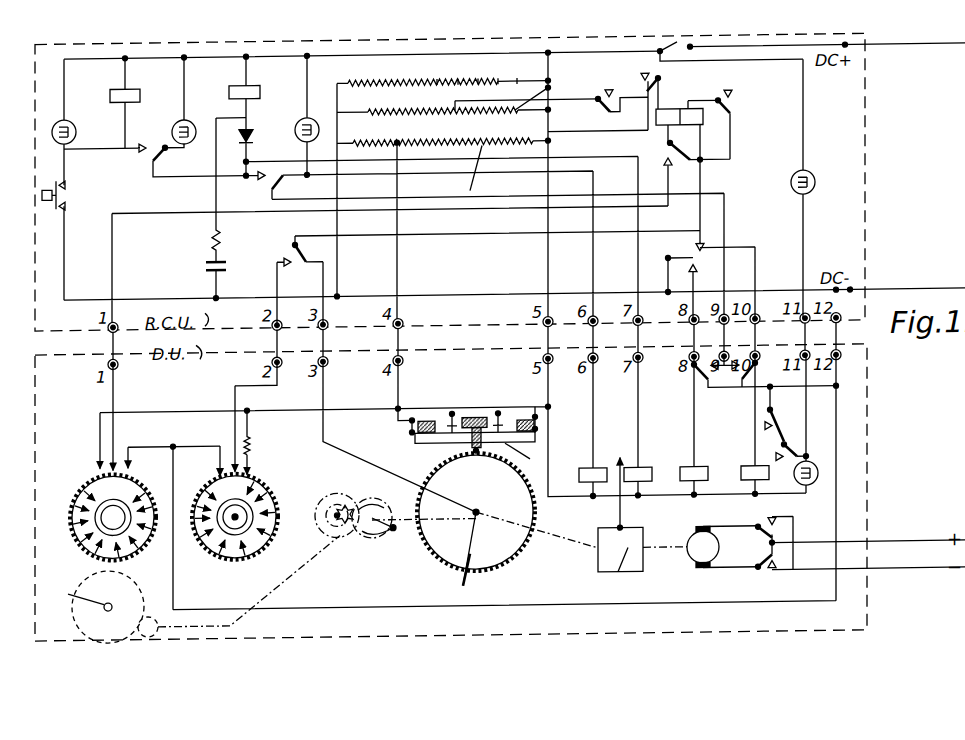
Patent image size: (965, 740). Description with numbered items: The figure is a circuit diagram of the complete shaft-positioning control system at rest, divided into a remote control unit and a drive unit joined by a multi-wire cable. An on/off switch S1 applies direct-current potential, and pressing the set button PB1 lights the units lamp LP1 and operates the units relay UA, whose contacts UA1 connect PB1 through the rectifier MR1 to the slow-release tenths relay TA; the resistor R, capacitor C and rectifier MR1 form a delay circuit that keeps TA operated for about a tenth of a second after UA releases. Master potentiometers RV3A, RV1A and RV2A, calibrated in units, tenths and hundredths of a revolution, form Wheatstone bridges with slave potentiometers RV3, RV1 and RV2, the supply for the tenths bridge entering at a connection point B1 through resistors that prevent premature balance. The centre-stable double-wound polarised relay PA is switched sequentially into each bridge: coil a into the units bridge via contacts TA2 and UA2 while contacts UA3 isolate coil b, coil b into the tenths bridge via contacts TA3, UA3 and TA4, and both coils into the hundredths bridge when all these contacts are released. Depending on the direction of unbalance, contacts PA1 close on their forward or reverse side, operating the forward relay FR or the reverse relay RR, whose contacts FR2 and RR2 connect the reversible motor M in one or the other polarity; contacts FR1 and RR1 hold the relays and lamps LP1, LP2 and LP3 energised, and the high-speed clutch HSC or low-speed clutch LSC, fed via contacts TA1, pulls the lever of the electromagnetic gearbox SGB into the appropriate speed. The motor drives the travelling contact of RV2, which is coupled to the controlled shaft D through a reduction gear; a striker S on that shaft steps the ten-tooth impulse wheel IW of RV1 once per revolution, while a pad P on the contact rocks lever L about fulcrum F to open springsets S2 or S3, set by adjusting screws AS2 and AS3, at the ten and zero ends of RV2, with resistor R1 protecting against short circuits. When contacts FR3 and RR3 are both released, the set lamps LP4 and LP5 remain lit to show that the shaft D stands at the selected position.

The units indicating lamp LP1 is at (79, 122).
The units relay UA is at (104, 104).
The tenths indicating lamp LP2 is at (169, 102).
The relay contacts UA1 is at (155, 160).
The set switch button PB1 is at (71, 197).
The tenths relay TA is at (232, 85).
The dry plate rectifier MR1 is at (252, 136).
The resistor R is at (224, 190).
The capacitor C is at (223, 280).
The hundredths indicating lamp LP3 is at (293, 116).
The relay contacts TA1 is at (258, 190).
The relay contacts TA4 is at (285, 263).
The units master potentiometer RV3A is at (442, 85).
The tenths master potentiometer RV1A is at (467, 95).
The resistor R1 is at (442, 142).
The hundredths master potentiometer RV2A is at (451, 173).
The on/off switch S1 is at (812, 64).
The relay contacts TA2 is at (634, 102).
The relay contacts UA3 is at (609, 106).
The polarised relay PA is at (677, 118).
The relay contacts TA3 is at (735, 118).
The relay contacts UA2 is at (663, 166).
The set lamp LP4 is at (791, 193).
The polarised relay contacts PA1 is at (700, 222).
The units slave potentiometer RV3 is at (158, 470).
The supply connection point B1 is at (260, 442).
The tenths slave potentiometer RV1 is at (262, 478).
The controlled shaft D is at (99, 607).
The impulse wheel IW is at (334, 506).
The striker S is at (414, 520).
The springset S2 is at (412, 430).
The adjusting screw AS2 is at (450, 420).
The fulcrum F is at (474, 425).
The adjusting screw AS3 is at (497, 420).
The springset S3 is at (537, 430).
The lever L is at (523, 456).
The hundredths slave potentiometer RV2 is at (428, 466).
The pad P is at (475, 551).
The low speed electromagnetic clutch LSC is at (580, 427).
The high speed electromagnetic clutch HSC is at (640, 460).
The forward relay FR is at (686, 463).
The reverse relay RR is at (755, 466).
The relay contacts FR1 is at (699, 393).
The relay contacts RR1 is at (752, 400).
The relay contacts RR3 is at (786, 430).
The relay contacts FR3 is at (798, 466).
The set lamp LP5 is at (819, 479).
The two-speed electromagnetic gearbox SGB is at (639, 562).
The reversible D.C. electric motor M is at (722, 547).
The relay contacts FR2 is at (850, 531).
The relay contacts RR2 is at (852, 572).